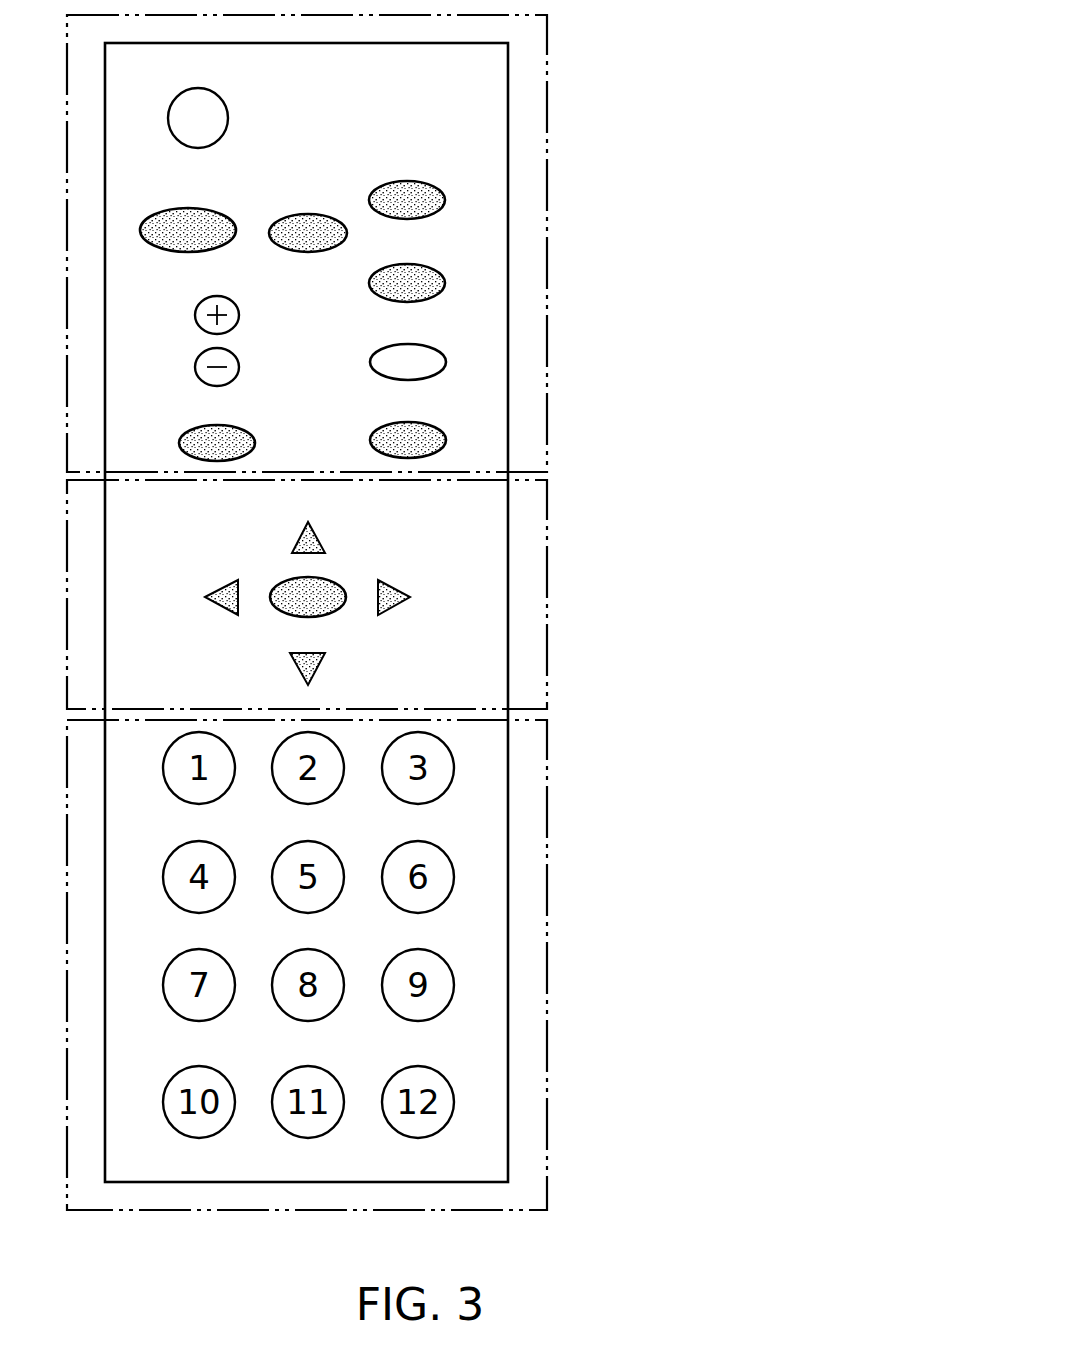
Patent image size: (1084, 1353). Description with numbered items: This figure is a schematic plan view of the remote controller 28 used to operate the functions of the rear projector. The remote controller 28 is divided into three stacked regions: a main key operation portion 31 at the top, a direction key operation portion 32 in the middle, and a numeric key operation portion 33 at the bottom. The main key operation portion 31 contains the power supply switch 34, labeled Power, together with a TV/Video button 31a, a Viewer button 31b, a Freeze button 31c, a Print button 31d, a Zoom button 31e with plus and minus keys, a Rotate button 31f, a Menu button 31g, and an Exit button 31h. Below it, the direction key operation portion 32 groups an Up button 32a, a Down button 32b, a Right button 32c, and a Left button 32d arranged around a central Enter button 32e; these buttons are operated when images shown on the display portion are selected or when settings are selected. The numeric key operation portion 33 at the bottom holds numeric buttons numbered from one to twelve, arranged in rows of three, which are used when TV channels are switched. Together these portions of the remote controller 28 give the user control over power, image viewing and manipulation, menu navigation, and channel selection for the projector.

The remote controller 28 is at (580, 82).
The main key operation portion 31 is at (547, 302).
The direction key operation portion 32 is at (547, 547).
The numeric key operation portion 33 is at (547, 852).
The power supply switch 34 is at (224, 137).
The "TV/Video" button 31a is at (152, 250).
The "Viewer" button 31b is at (298, 252).
The "Freeze" button 31c is at (444, 205).
The "Print" button 31d is at (444, 288).
The "Zoom" button 31e is at (188, 310).
The "Rotate" button 31f is at (444, 366).
The "Menu" button 31g is at (240, 427).
The "Exit" button 31h is at (388, 424).
The "Up" button 32a is at (325, 540).
The "Down" button 32b is at (320, 668).
The "Right" button 32c is at (386, 590).
The "Left" button 32d is at (228, 585).
The "Enter" button 32e is at (340, 612).